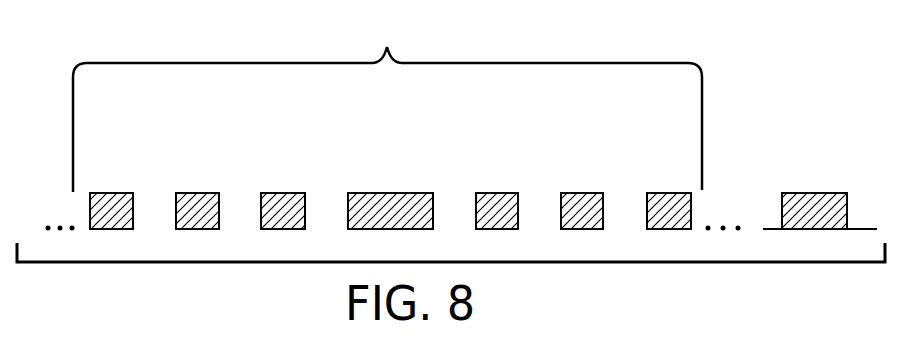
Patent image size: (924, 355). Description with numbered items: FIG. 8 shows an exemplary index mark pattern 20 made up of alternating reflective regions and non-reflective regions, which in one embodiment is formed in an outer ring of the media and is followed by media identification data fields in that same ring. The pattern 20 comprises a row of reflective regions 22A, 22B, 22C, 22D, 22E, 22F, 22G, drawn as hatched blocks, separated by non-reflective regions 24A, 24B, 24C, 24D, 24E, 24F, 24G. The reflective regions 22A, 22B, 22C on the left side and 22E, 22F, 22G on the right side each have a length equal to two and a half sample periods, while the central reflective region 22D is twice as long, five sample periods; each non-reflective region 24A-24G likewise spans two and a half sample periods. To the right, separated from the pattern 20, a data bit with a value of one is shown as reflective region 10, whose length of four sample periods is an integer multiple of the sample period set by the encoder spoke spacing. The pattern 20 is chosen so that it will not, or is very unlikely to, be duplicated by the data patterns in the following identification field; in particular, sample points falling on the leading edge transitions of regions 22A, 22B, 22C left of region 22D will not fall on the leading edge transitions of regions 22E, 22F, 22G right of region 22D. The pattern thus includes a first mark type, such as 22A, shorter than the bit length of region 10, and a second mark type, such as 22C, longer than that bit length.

The reflective region 10 is at (828, 193).
The index mark pattern 20 is at (387, 104).
The reflective region 22A is at (108, 193).
The reflective region 22B is at (195, 193).
The reflective region 22C is at (282, 193).
The reflective region 22D is at (403, 193).
The reflective region 22E is at (498, 193).
The reflective region 22F is at (583, 193).
The reflective region 22G is at (665, 193).
The non-reflective region 24A is at (157, 207).
The non-reflective region 24B is at (245, 207).
The non-reflective region 24C is at (332, 207).
The non-reflective region 24D is at (452, 207).
The non-reflective region 24E is at (547, 207).
The non-reflective region 24F is at (632, 207).
The non-reflective region 24G is at (703, 203).